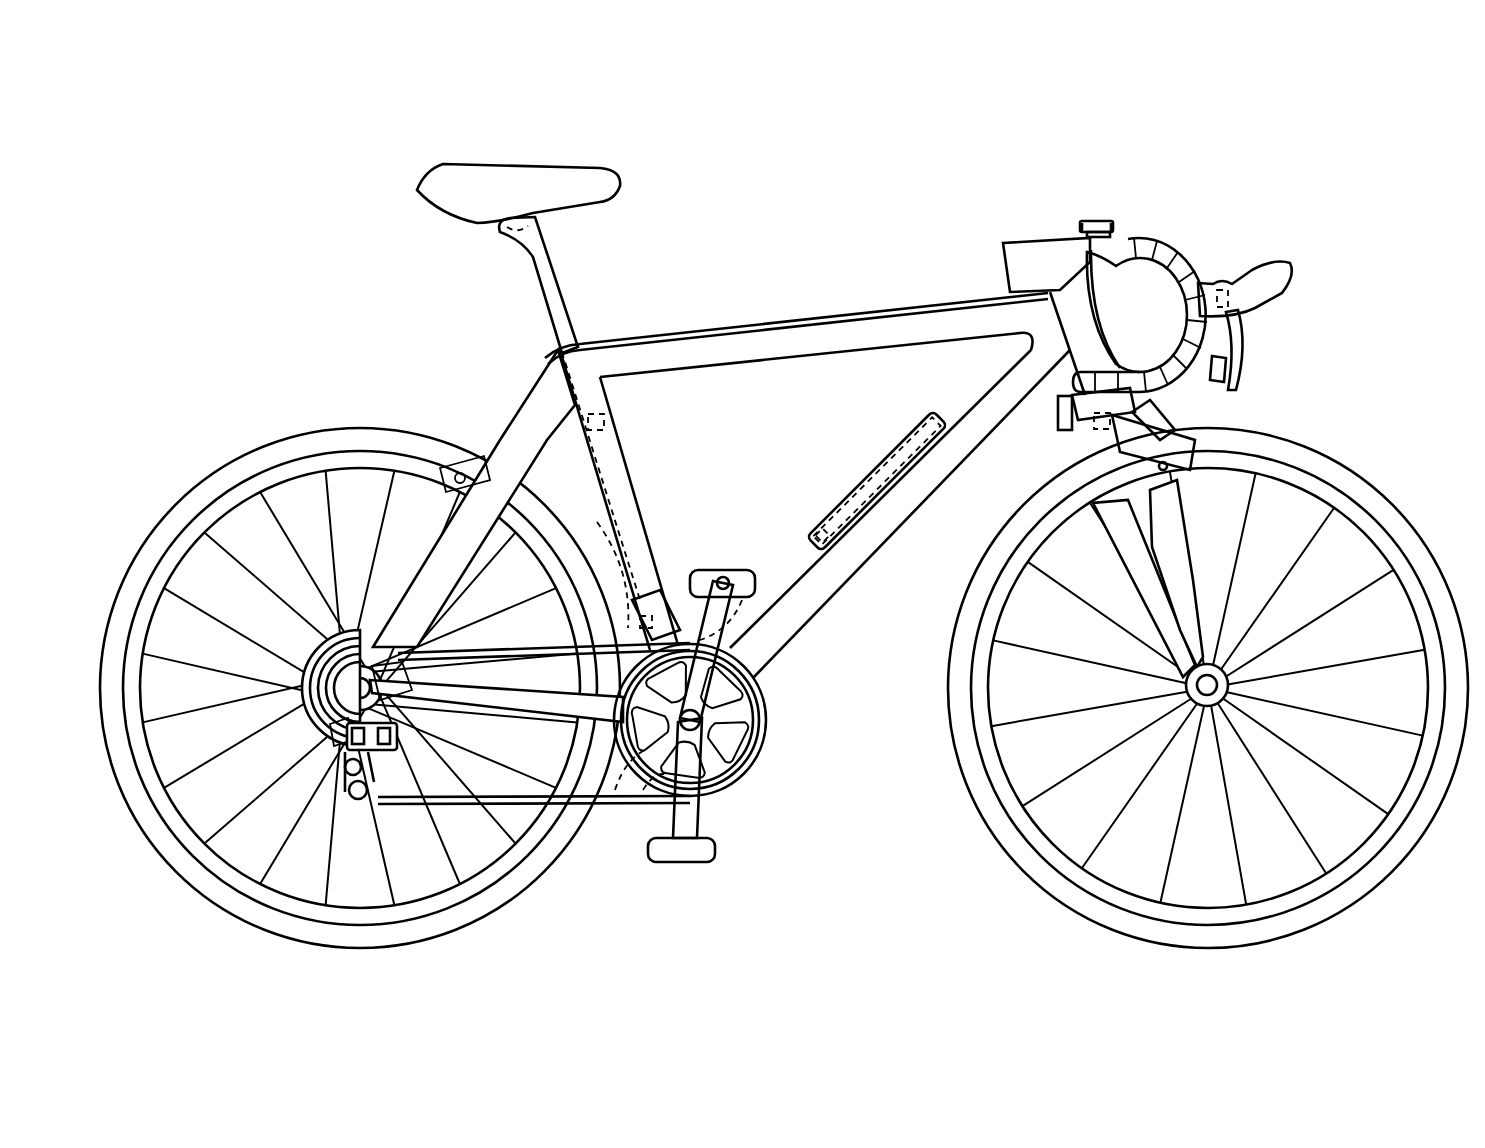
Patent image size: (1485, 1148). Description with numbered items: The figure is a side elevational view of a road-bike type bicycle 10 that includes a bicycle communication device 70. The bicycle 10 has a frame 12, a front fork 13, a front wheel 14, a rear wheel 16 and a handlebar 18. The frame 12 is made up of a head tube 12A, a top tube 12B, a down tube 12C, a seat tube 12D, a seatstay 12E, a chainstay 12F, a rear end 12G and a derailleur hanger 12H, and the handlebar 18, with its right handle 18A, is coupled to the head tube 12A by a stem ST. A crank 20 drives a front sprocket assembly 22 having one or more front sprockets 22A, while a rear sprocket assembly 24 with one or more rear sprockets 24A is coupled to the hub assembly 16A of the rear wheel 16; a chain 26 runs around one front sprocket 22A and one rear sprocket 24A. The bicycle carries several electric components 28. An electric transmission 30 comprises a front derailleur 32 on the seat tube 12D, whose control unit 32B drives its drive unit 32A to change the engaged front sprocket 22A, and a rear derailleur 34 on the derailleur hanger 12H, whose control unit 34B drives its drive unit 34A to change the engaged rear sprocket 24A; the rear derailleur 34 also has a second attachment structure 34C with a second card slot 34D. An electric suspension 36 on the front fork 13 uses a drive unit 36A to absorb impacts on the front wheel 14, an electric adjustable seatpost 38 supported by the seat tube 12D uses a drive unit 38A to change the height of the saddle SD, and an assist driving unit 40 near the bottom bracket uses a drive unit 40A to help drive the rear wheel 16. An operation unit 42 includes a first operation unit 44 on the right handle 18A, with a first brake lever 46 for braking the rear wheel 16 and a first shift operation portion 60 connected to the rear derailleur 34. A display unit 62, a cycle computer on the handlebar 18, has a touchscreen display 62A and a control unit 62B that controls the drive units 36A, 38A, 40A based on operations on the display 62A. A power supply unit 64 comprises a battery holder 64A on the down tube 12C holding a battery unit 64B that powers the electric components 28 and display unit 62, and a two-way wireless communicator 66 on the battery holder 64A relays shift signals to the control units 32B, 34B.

The bicycle 10 is at (1205, 112).
The frame 12 is at (918, 268).
The head tube 12A is at (1026, 340).
The top tube 12B is at (737, 366).
The down tube 12C is at (858, 560).
The seat tube 12D is at (632, 460).
The seatstay 12E is at (545, 432).
The chainstay 12F is at (490, 683).
The rear end 12G is at (385, 640).
The derailleur hanger 12H is at (320, 737).
The front fork 13 is at (1047, 408).
The front wheel 14 is at (1358, 472).
The rear wheel 16 is at (360, 656).
The hub assembly 16A is at (316, 628).
The handlebar 18 is at (1163, 291).
The right handle 18A is at (1163, 291).
The crank 20 is at (735, 775).
The front sprocket assembly 22 is at (724, 724).
The front sprocket 22A is at (604, 814).
The rear sprocket assembly 24 is at (287, 671).
The rear sprocket 24A is at (255, 712).
The chain 26 is at (520, 810).
The bicycle electric components 28 is at (788, 518).
The bicycle electric transmission 30 is at (680, 595).
The front derailleur 32 is at (679, 569).
The drive unit 32A is at (600, 522).
The control unit 32B is at (760, 575).
The rear derailleur 34 is at (389, 793).
The drive unit 34A is at (330, 790).
The control unit 34B is at (465, 825).
The second attachment structure 34C is at (430, 715).
The second card slot 34D is at (425, 745).
The bicycle electric suspension 36 is at (1091, 525).
The drive unit 36A is at (1049, 451).
The bicycle electric adjustable seatpost 38 is at (590, 408).
The drive unit 38A is at (622, 476).
The bicycle assist driving unit 40 is at (750, 744).
The drive unit 40A is at (643, 809).
The bicycle operation unit 42 is at (1268, 358).
The first operation unit 44 is at (1264, 301).
The first brake lever 46 is at (1290, 272).
The first shift operation portion 60 is at (1207, 388).
The display unit 62 is at (1110, 174).
The display 62A is at (1088, 220).
The control unit 62B is at (1112, 145).
The power supply unit 64 is at (869, 453).
The battery holder 64A is at (922, 418).
The battery unit 64B is at (860, 478).
The wireless communicator 66 is at (817, 520).
The bicycle communication device 70 is at (1222, 288).
The saddle SD is at (599, 168).
The stem ST is at (1040, 240).